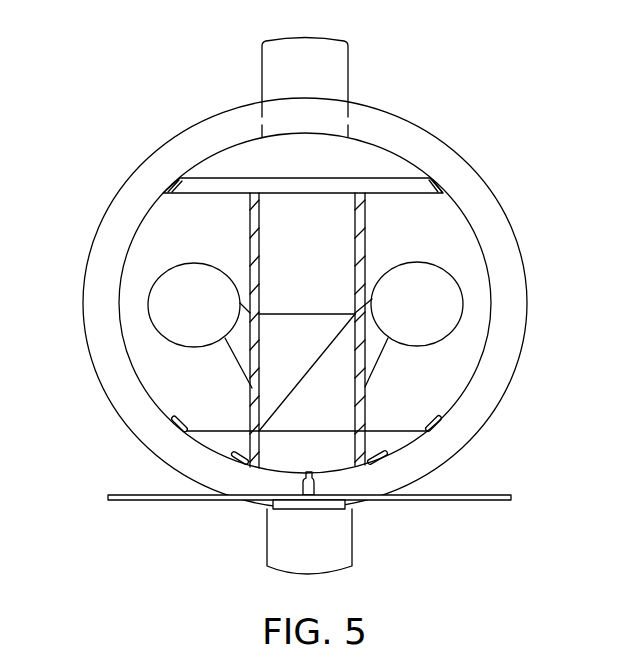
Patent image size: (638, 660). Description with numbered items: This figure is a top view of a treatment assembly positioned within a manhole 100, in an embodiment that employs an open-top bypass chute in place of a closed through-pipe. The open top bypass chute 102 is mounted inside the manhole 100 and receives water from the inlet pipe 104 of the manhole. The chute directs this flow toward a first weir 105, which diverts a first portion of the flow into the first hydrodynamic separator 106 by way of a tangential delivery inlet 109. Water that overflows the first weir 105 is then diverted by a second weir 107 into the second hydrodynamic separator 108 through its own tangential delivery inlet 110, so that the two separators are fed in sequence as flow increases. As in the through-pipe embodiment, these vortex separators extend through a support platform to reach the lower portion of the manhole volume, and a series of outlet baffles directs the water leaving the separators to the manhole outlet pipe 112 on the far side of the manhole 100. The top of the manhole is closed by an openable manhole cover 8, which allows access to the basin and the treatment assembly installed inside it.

The manhole 100 is at (410, 122).
The manhole outlet pipe 112 is at (348, 64).
The open top bypass chute 102 is at (365, 228).
The second weir 107 is at (300, 314).
The first weir 105 is at (323, 353).
The hydrodynamic separator 108 is at (148, 301).
The first hydrodynamic separator 106 is at (463, 292).
The tangential delivery inlet 110 is at (236, 366).
The tangential delivery inlet 109 is at (375, 368).
The inlet pipe 104 is at (267, 545).
The manhole cover 8 is at (468, 500).